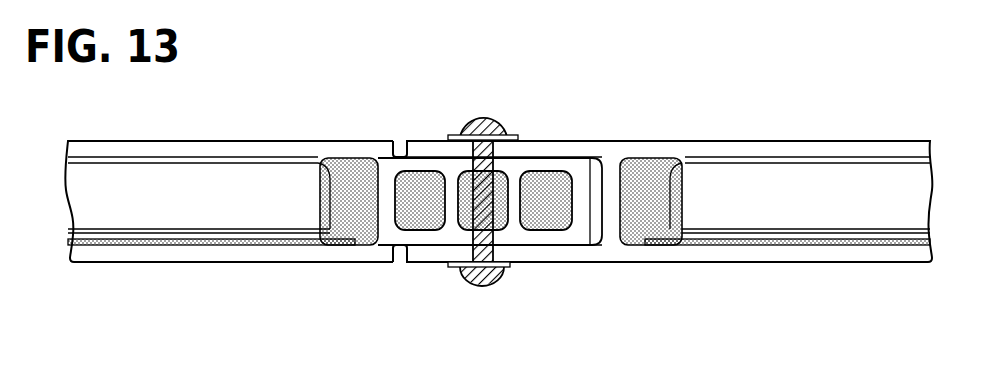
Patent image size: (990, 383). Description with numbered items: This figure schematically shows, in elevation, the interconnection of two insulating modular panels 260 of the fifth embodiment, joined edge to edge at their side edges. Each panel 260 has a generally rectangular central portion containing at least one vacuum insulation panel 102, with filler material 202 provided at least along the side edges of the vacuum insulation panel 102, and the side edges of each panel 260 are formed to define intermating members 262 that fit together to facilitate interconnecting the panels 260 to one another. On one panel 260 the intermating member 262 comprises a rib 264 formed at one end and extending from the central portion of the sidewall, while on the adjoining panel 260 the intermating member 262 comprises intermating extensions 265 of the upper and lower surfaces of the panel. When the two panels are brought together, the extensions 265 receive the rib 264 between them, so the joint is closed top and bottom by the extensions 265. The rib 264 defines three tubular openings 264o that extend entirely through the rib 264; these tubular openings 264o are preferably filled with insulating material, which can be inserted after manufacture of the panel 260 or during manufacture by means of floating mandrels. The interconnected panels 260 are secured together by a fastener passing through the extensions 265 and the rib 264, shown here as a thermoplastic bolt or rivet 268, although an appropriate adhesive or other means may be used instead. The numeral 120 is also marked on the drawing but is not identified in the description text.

The vacuum insulation panel 102 is at (149, 215).
The honeycomb core 120 is at (325, 208).
The filler material 202 is at (350, 177).
The insulating panel 260 is at (183, 274).
The intermating members 262 is at (552, 130).
The rib 264 is at (515, 237).
The tubular openings 264o is at (543, 215).
The intermating extensions 265 is at (432, 148).
The thermoplastic bolt or rivet 268 is at (482, 285).